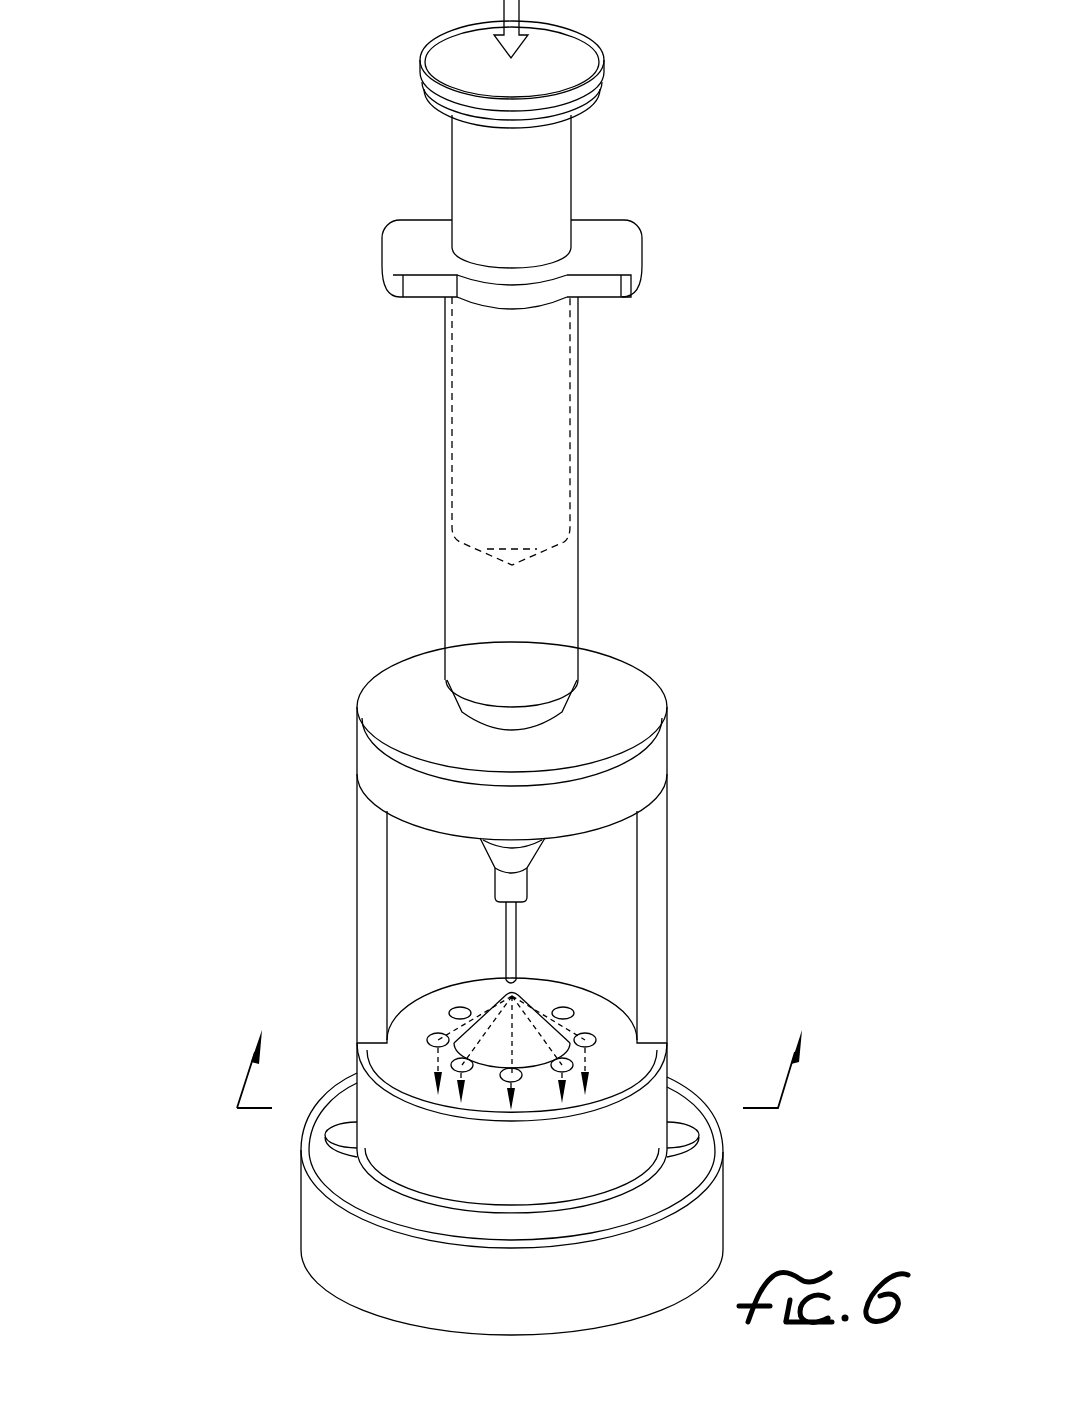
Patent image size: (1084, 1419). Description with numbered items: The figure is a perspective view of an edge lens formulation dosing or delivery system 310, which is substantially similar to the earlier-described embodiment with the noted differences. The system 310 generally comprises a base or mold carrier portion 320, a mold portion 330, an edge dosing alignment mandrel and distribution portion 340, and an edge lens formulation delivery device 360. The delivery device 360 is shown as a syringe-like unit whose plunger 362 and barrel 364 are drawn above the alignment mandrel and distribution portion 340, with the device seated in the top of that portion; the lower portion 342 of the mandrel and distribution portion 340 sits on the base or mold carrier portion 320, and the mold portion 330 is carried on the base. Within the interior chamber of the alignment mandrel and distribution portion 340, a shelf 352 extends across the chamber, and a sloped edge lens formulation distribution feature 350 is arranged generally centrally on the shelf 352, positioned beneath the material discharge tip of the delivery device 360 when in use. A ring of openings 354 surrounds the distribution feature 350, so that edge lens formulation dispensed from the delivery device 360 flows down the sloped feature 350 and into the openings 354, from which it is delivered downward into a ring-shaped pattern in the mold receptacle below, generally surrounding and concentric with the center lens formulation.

The edge lens formulation dosing or delivery system 310 is at (214, 494).
The base or mold carrier portion 320 is at (254, 1227).
The mold portion 330 is at (682, 1135).
The edge dosing alignment mandrel and distribution portion 340 is at (295, 873).
The collection chamber 342 is at (484, 1172).
The sloped edge lens formulation distribution feature 350 is at (525, 1032).
The shelf 352 is at (435, 1018).
The openings 354 is at (587, 1042).
The edge lens formulation delivery device 360 is at (646, 414).
The plunger 362 is at (498, 171).
The barrel 364 is at (493, 602).